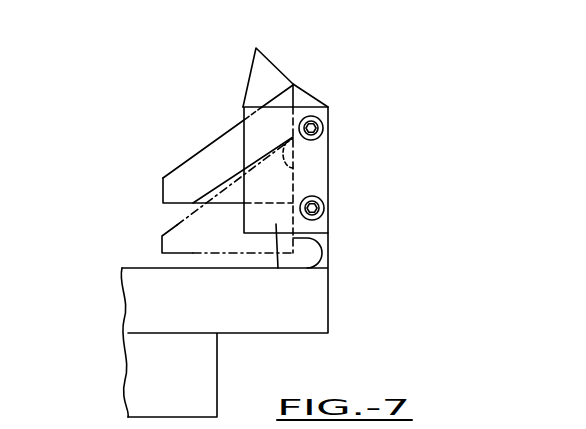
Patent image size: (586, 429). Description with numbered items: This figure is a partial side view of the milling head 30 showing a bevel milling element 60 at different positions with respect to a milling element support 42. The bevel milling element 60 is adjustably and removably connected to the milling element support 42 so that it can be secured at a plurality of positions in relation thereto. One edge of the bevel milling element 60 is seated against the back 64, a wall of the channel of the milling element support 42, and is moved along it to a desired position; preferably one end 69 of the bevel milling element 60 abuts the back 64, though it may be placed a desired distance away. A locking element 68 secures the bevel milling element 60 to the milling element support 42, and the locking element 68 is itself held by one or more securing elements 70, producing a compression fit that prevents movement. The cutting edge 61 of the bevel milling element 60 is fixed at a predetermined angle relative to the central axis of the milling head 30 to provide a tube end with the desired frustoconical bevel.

The milling head 30 is at (330, 290).
The milling element support 42 is at (330, 175).
The bevel milling element 60 is at (163, 178).
The cutting edge 61 is at (210, 138).
The back 64 is at (308, 146).
The locking element 68 is at (277, 270).
The end 69 is at (330, 244).
The securing elements 70 is at (325, 130).